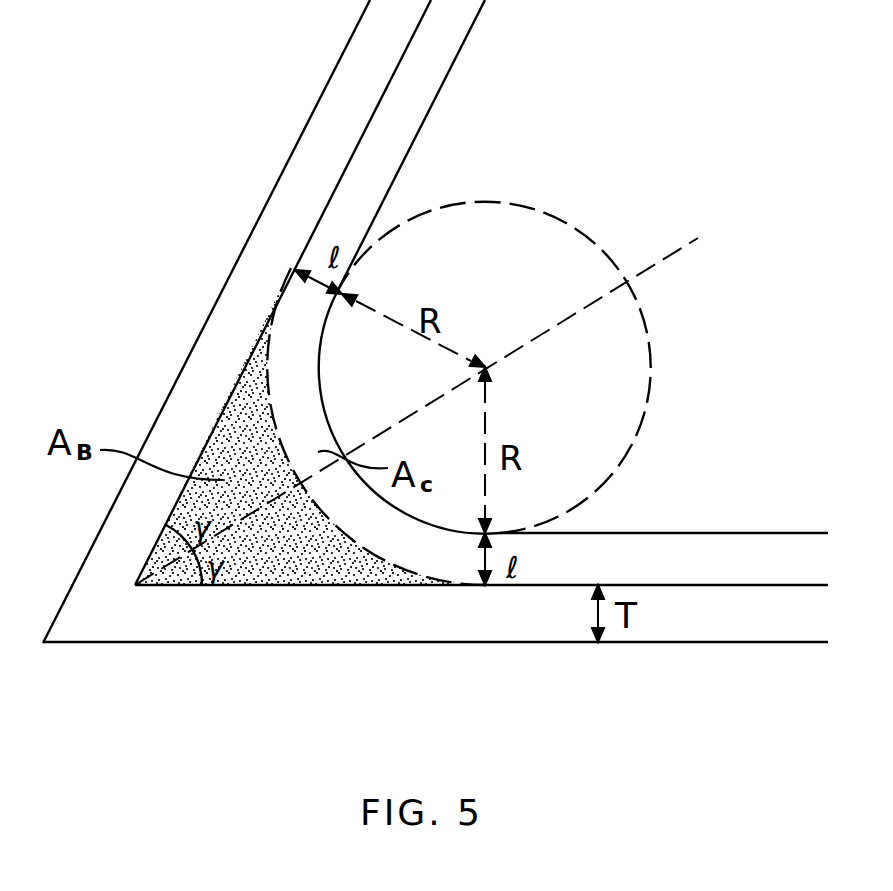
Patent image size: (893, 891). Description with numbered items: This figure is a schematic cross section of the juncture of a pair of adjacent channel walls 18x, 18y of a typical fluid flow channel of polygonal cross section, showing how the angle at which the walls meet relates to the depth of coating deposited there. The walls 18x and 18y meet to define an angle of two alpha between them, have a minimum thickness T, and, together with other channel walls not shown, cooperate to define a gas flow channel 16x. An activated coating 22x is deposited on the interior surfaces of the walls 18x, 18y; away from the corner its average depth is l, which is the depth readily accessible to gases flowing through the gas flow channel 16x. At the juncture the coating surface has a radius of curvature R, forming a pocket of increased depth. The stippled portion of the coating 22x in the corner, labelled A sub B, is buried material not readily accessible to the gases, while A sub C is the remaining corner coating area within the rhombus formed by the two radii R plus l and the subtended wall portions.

The channel wall 18x is at (323, 606).
The channel wall 18y is at (260, 246).
The gas flow channel 16x is at (692, 193).
The activated coating 22x is at (652, 548).